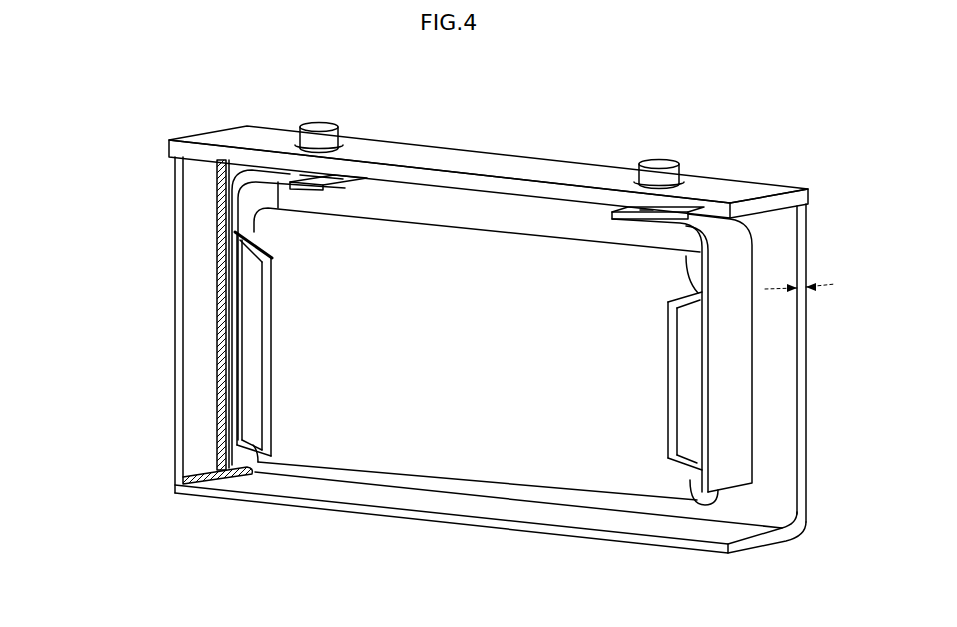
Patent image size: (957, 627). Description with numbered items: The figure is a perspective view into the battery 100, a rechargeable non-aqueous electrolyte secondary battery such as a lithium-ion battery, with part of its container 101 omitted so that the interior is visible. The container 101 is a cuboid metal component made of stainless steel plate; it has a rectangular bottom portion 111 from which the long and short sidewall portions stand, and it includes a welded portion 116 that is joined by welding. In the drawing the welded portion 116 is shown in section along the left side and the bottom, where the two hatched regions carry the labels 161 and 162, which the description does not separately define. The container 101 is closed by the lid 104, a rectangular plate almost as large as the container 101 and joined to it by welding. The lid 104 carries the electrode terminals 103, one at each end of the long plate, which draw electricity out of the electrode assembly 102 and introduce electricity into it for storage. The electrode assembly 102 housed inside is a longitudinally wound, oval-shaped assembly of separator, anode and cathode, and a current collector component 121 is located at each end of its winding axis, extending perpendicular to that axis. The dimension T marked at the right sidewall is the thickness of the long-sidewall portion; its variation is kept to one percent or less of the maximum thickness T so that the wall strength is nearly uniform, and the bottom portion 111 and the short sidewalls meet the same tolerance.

The battery 100 is at (777, 108).
The container 101 is at (177, 370).
The electrode assembly 102 is at (476, 394).
The electrode terminal 103 is at (318, 122).
The lid 104 is at (560, 165).
The bottom portion 111 is at (600, 535).
The welded portion 116 is at (217, 215).
The first wall portion (vertical) 161 is at (221, 315).
The second wall portion (bottom) 162 is at (217, 475).
The current collector component 121 is at (242, 220).
The thickness of the long-sidewall portion T is at (834, 283).